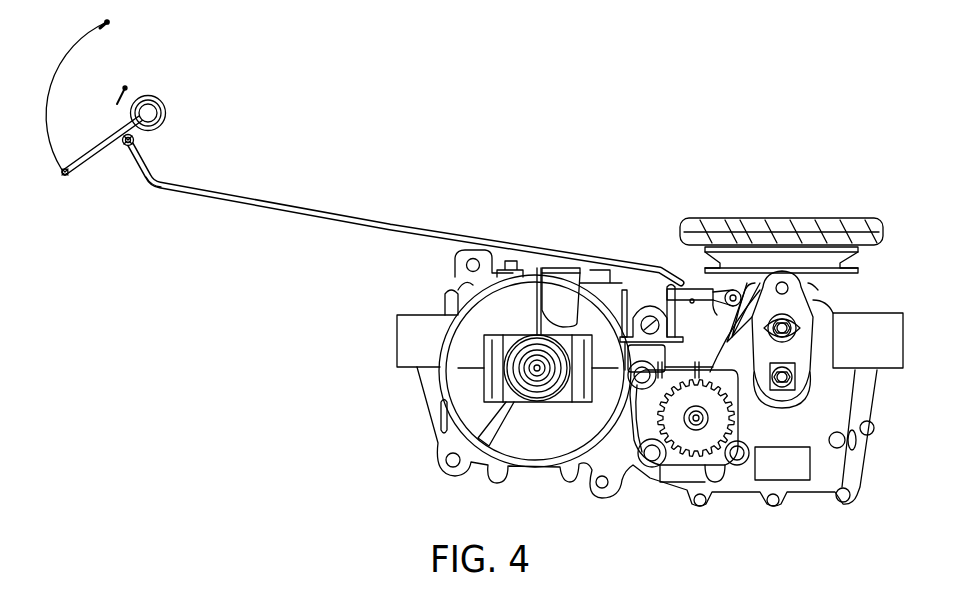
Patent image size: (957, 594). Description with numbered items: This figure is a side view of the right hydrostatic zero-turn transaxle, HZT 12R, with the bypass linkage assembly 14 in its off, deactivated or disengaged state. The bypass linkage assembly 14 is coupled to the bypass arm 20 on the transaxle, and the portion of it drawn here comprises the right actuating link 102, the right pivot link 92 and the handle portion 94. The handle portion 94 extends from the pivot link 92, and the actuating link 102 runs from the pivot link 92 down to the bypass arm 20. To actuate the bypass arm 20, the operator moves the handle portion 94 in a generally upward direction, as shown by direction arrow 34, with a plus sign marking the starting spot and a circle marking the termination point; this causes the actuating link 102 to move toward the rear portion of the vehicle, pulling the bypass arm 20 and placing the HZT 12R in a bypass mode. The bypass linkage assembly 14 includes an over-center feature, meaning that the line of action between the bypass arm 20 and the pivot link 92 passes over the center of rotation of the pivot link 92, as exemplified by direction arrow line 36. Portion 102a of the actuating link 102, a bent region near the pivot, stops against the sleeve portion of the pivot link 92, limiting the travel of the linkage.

The HZT 12R is at (368, 434).
The bypass linkage assembly 14 is at (318, 183).
The bypass arm 20 is at (667, 280).
The direction arrow 34 is at (68, 54).
The direction arrow line 36 is at (117, 125).
The right pivot link 92 is at (157, 98).
The handle portion 94 is at (92, 160).
The right actuating link 102 is at (228, 207).
The portion of actuating link 102a is at (153, 174).